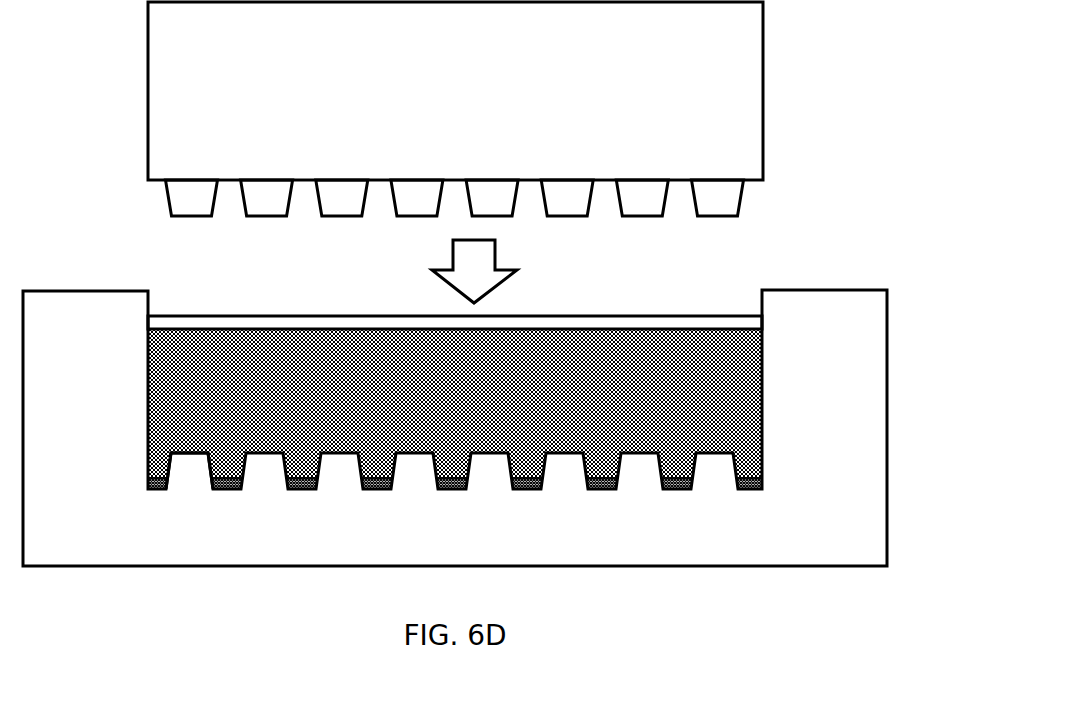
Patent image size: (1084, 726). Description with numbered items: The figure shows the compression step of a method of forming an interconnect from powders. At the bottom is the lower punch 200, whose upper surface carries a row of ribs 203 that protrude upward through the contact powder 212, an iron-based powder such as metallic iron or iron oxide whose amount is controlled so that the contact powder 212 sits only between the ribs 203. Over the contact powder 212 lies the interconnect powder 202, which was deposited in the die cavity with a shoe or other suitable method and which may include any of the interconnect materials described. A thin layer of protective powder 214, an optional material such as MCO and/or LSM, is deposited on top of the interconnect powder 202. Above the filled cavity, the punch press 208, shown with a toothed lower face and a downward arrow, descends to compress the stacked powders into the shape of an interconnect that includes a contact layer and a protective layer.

The punch press 208 is at (455, 109).
The lower punch 200 is at (455, 428).
The interconnect powder 202 is at (455, 403).
The protective powder 214 is at (588, 316).
The contact powder 212 is at (762, 489).
The ribs 203 is at (198, 478).